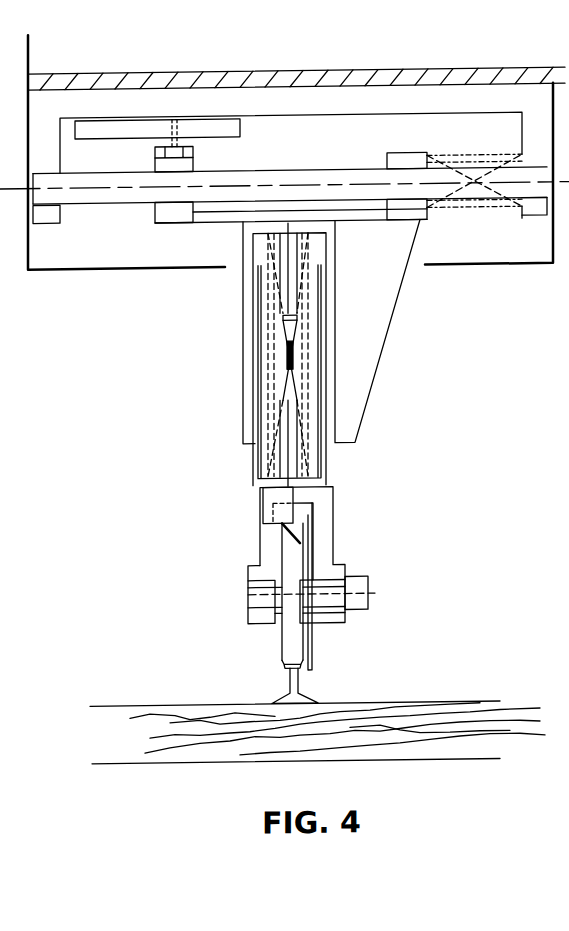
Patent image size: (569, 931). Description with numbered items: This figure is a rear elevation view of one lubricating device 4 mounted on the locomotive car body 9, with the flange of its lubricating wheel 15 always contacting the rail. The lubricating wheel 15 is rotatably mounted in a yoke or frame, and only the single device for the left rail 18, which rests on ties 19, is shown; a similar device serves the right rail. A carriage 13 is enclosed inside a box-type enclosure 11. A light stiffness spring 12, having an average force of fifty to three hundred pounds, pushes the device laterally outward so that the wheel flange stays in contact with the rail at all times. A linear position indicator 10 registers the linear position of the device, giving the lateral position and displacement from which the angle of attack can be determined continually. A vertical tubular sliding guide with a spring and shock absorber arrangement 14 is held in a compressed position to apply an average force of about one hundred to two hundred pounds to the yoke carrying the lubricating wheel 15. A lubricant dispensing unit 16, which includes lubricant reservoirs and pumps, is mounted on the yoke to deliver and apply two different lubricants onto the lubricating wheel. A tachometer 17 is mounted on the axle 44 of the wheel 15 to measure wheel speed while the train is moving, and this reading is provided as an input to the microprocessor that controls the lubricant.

The locomotive car body 9 is at (296, 55).
The linear position indicator 10 is at (161, 134).
The box-type enclosure 11 is at (296, 174).
The light stiffness spring 12 is at (454, 204).
The carriage 13 is at (252, 229).
The spring and shock absorber arrangement 14 is at (362, 353).
The lubricating device 4 is at (333, 576).
The lubricant dispensing unit 16 is at (209, 488).
The axle 44 is at (253, 586).
The tachometer 17 is at (405, 580).
The lubricating wheel 15 is at (219, 596).
The left rail 18 is at (345, 676).
The ties 19 is at (328, 714).